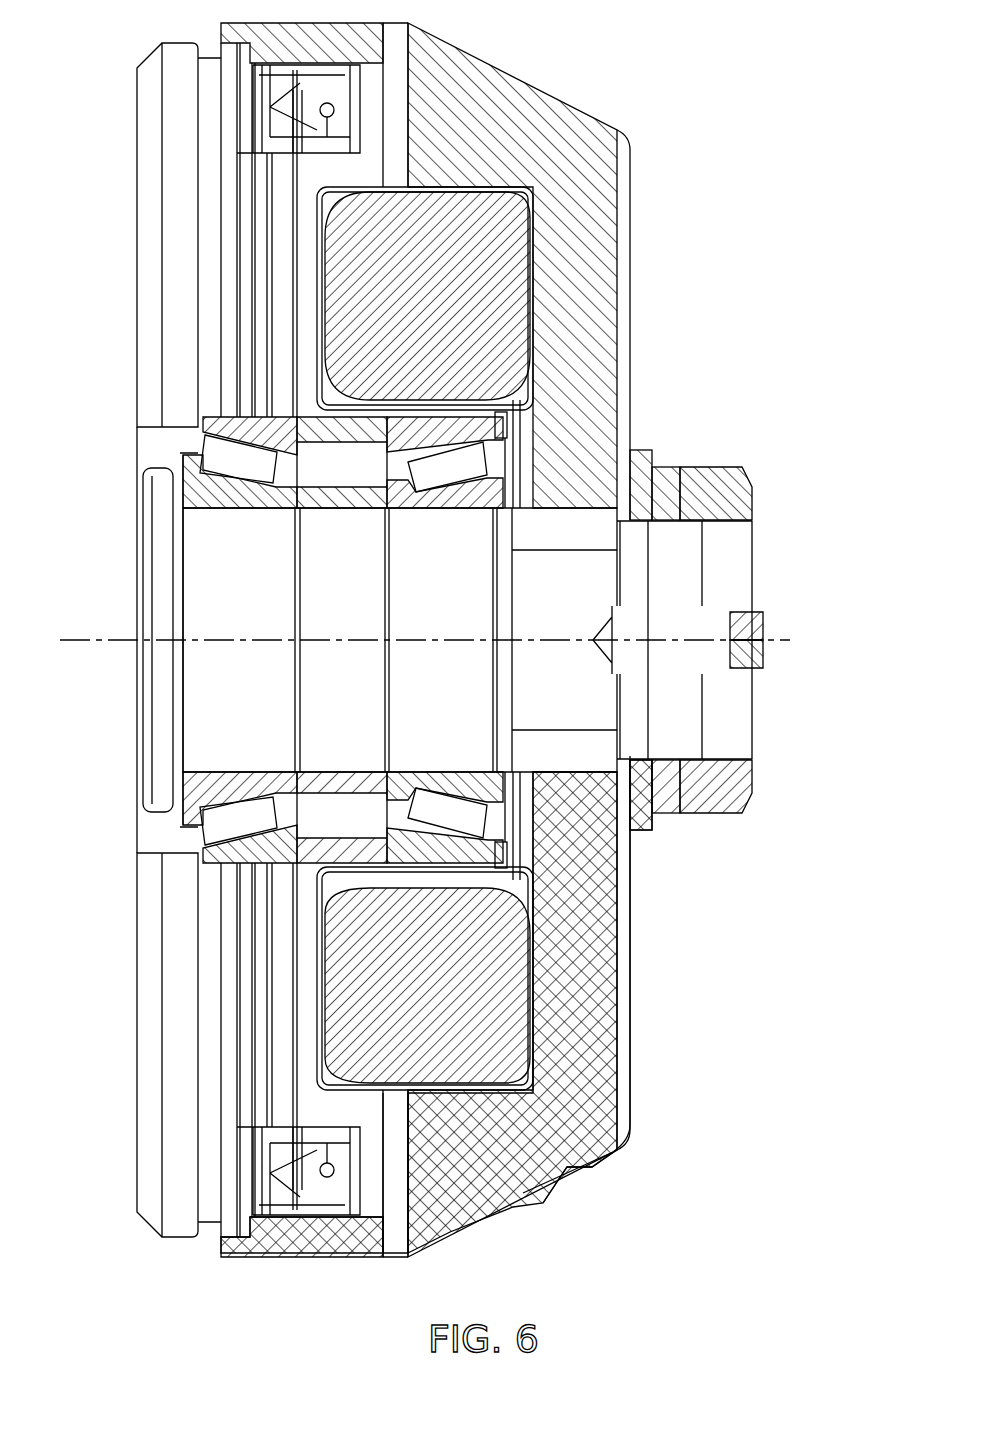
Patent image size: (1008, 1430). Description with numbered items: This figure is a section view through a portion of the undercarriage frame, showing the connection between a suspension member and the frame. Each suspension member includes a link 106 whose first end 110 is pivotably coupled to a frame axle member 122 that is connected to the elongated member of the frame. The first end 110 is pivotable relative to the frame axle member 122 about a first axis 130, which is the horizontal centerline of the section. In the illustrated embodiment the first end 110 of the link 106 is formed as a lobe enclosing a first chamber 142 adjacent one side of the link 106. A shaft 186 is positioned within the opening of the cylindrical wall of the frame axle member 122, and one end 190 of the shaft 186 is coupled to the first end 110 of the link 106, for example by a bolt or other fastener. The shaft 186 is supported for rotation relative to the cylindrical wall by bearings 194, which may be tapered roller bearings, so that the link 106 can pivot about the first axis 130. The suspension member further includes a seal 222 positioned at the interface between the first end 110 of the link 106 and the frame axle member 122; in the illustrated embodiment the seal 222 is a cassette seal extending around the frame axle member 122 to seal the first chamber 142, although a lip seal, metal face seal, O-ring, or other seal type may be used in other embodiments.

The link 106 is at (683, 139).
The first end 110 is at (590, 1062).
The frame axle member 122 is at (173, 165).
The first axis 130 is at (97, 634).
The first chamber 142 is at (530, 252).
The shaft 186 is at (227, 708).
The end of the shaft 190 is at (758, 562).
The bearings 194 is at (408, 842).
The seal 222 is at (350, 1180).